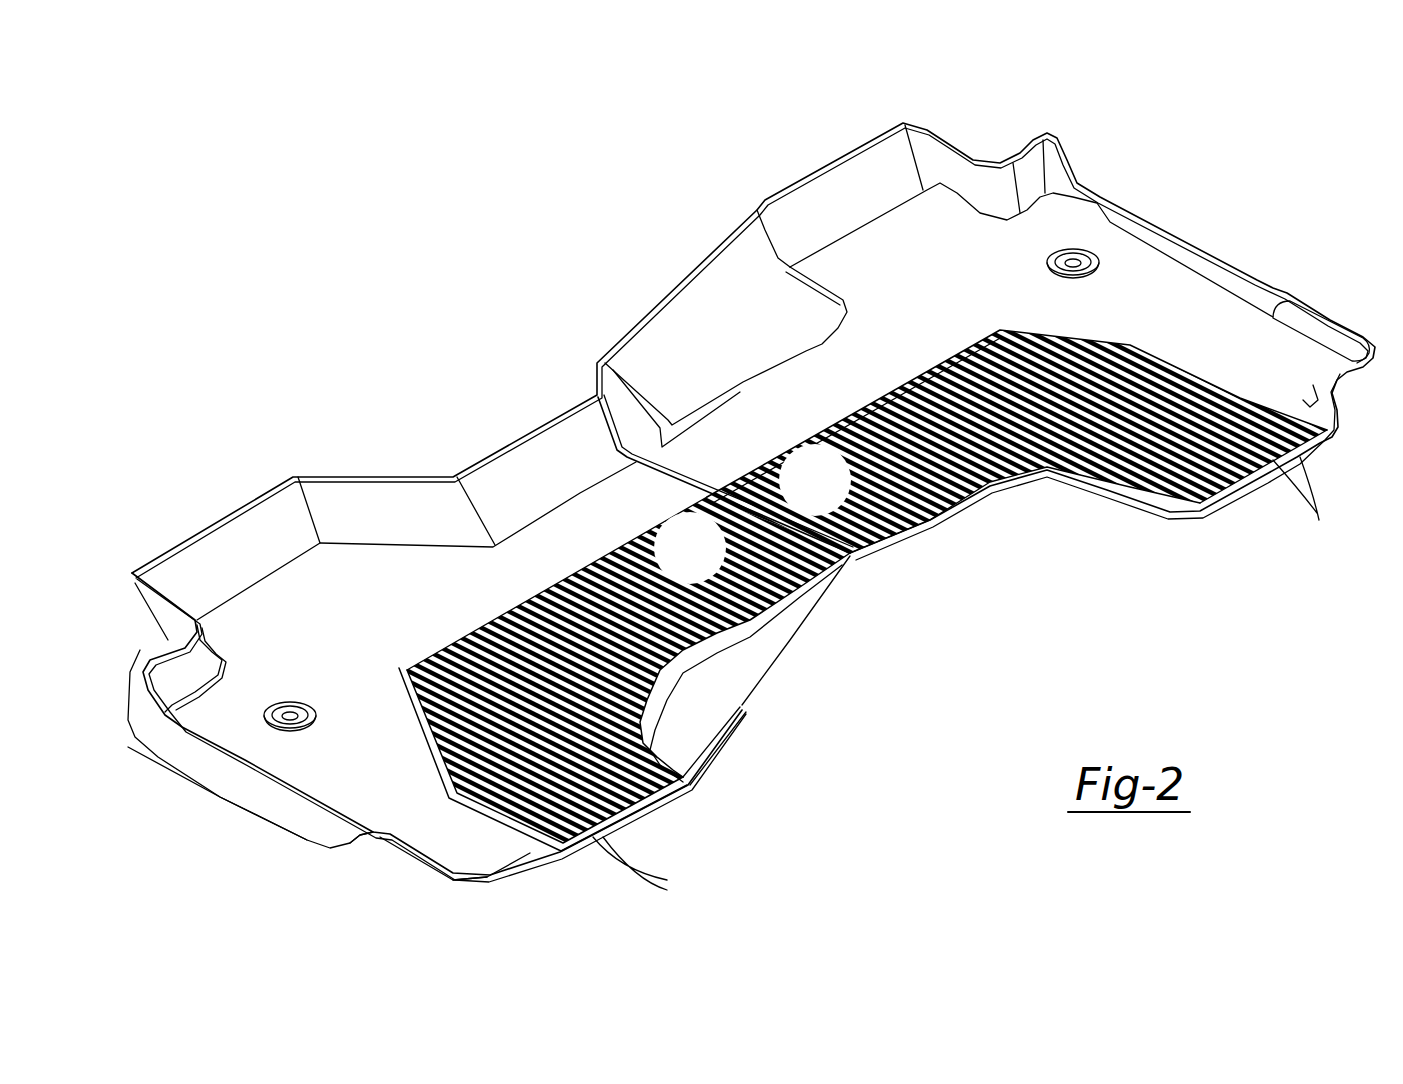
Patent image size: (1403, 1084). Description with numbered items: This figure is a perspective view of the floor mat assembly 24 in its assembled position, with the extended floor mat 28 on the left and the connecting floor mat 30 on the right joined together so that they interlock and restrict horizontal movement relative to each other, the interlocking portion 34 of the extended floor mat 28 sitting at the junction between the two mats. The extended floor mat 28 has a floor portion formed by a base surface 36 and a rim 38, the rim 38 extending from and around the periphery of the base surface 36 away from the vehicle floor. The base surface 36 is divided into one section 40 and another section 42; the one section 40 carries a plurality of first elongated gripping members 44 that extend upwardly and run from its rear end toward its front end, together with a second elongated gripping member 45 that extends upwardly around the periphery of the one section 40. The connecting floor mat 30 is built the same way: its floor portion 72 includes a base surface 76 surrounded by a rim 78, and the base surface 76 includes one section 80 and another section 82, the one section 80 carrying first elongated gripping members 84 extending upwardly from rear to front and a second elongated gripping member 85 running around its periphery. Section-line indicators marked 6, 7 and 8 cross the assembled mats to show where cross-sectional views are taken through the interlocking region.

The floor mat assembly 24 is at (698, 232).
The extended floor mat 28 is at (1118, 188).
The connecting floor mat 30 is at (393, 442).
The interlocking portion 34 is at (591, 384).
The base surface 36 is at (1189, 234).
The rim 38 is at (975, 182).
The one section 40 is at (1242, 510).
The another section 42 is at (1122, 240).
The first elongated gripping members 44 is at (1312, 496).
The second elongated gripping member 45 is at (1348, 332).
The floor portion 72 is at (216, 802).
The base surface 76 is at (363, 798).
The rim 78 is at (240, 540).
The one section 80 is at (688, 780).
The another section 82 is at (388, 812).
The first elongated gripping members 84 is at (649, 871).
The second elongated gripping member 85 is at (477, 812).
The section line 6 is at (657, 446).
The section line 7 is at (770, 408).
The section line 8 is at (767, 468).